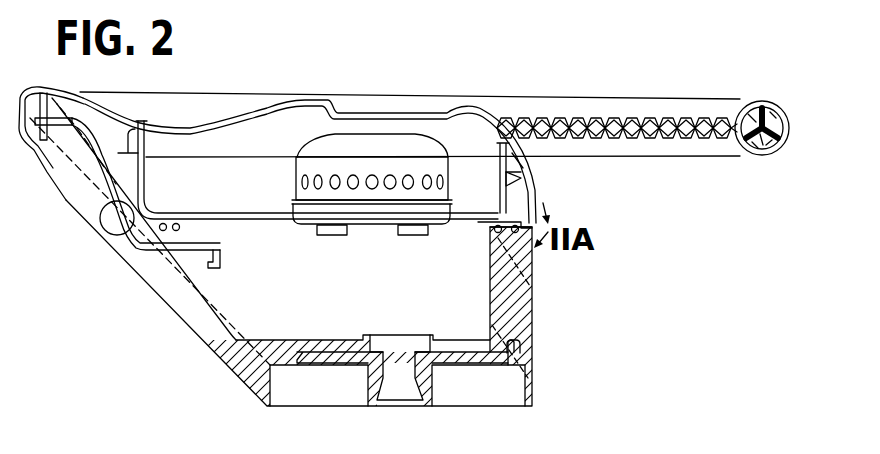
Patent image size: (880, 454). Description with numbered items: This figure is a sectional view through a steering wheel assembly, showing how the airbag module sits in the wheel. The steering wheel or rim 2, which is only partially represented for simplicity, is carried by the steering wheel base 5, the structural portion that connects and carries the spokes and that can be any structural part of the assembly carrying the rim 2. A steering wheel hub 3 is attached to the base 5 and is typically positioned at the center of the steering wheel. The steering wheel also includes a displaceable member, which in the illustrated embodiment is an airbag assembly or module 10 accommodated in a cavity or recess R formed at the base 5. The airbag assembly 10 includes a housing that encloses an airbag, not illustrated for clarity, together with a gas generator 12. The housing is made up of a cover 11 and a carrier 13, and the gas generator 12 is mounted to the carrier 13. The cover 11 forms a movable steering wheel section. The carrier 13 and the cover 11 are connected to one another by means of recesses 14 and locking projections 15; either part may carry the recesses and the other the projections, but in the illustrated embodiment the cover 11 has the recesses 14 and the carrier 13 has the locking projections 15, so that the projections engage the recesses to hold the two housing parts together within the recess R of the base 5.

The steering wheel rim 2 is at (655, 100).
The steering wheel hub 3 is at (402, 358).
The steering wheel base 5 is at (542, 307).
The airbag assembly 10 is at (348, 93).
The cover 11 is at (173, 122).
The gas generator 12 is at (380, 140).
The carrier 13 is at (193, 213).
The recesses 14 is at (513, 173).
The locking projections 15 is at (533, 181).
The recess R is at (117, 266).